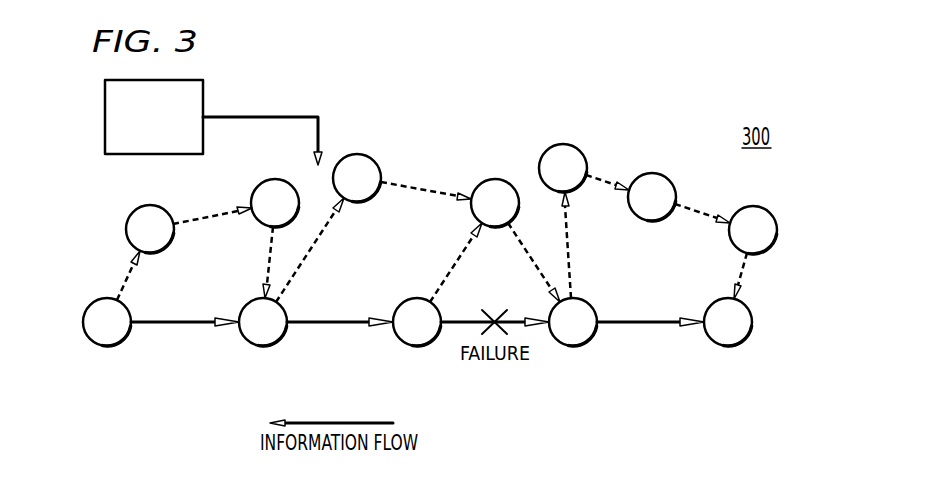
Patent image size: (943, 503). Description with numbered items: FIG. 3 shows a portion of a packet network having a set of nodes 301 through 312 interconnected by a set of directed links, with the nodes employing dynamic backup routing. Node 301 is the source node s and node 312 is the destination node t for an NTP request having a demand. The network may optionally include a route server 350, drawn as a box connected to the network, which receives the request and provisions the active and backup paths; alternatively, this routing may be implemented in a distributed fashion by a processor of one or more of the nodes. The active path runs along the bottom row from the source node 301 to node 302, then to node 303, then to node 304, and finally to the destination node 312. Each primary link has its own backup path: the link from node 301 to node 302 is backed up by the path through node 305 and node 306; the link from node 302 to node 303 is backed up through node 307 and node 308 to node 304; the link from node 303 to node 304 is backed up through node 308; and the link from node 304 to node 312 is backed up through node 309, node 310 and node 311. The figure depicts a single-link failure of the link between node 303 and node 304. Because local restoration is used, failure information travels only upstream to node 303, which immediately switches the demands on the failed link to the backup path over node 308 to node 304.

The source node s 301 is at (83, 320).
The node 302 is at (263, 346).
The node 303 is at (417, 346).
The node 304 is at (573, 346).
The node 305 is at (127, 224).
The node 306 is at (275, 179).
The node 307 is at (357, 154).
The node 308 is at (495, 179).
The node 309 is at (563, 144).
The node 310 is at (652, 173).
The node 311 is at (777, 232).
The destination node t 312 is at (752, 326).
The route server 350 is at (105, 118).